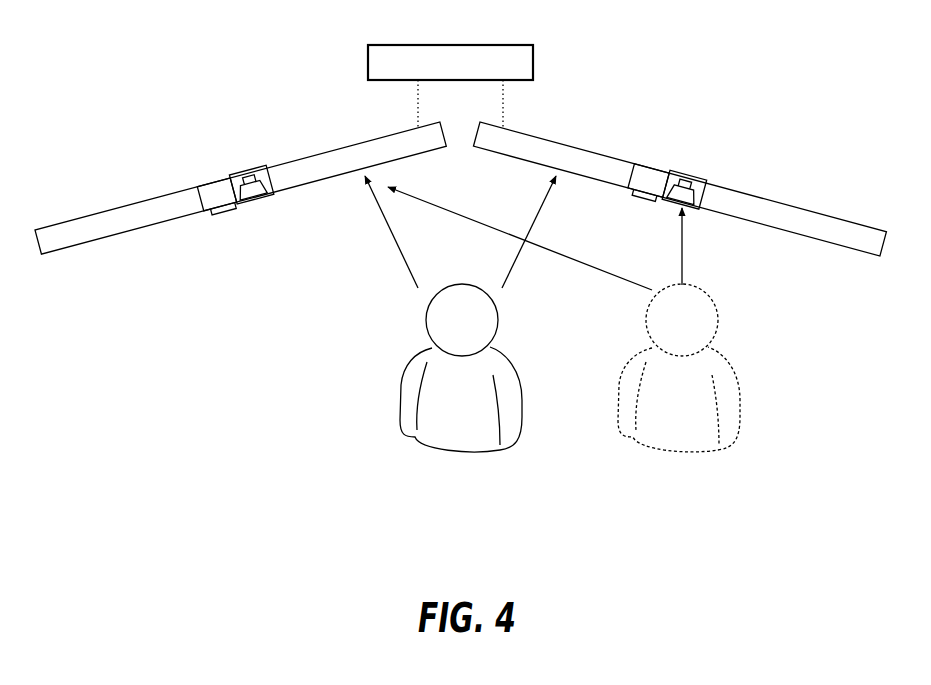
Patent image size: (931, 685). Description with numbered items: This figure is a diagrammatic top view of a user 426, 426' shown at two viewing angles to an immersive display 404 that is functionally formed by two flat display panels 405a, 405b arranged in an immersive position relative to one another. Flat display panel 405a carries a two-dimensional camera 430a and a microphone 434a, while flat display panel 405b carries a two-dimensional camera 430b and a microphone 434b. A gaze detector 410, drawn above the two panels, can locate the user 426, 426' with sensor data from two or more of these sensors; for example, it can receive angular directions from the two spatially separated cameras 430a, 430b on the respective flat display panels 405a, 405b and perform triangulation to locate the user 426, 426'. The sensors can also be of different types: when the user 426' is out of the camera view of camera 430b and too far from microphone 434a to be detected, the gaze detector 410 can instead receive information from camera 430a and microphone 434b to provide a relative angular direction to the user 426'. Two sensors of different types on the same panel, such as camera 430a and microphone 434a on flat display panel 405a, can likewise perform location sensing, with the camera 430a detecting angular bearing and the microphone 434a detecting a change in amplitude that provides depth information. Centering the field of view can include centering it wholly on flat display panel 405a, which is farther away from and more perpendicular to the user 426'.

The immersive display 404 is at (140, 170).
The flat display panel 405a is at (228, 145).
The flat display panel 405b is at (691, 149).
The gaze detector 410 is at (533, 61).
The two-dimensional (2D) camera 430a is at (201, 178).
The 2D camera 430b is at (640, 163).
The microphone 434a is at (250, 172).
The microphone 434b is at (697, 177).
The user 426 is at (410, 368).
The user 426' is at (712, 368).